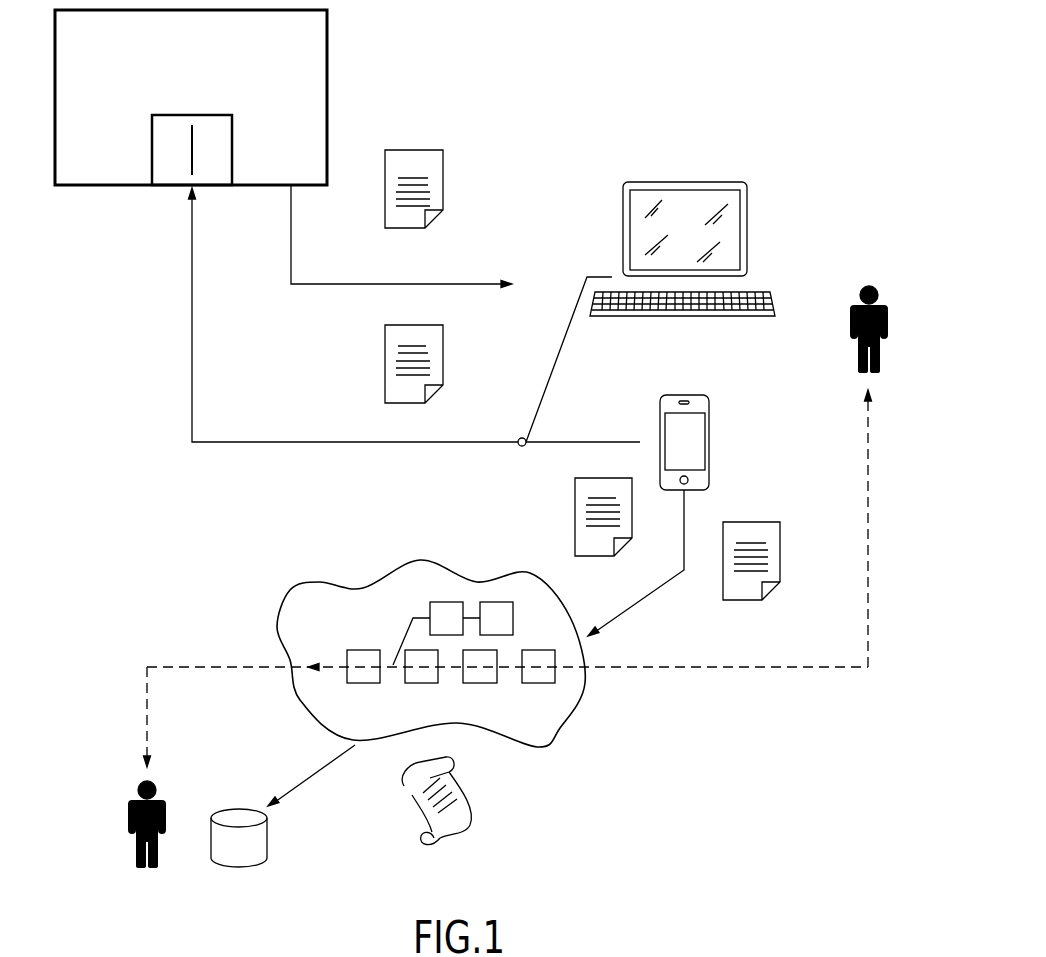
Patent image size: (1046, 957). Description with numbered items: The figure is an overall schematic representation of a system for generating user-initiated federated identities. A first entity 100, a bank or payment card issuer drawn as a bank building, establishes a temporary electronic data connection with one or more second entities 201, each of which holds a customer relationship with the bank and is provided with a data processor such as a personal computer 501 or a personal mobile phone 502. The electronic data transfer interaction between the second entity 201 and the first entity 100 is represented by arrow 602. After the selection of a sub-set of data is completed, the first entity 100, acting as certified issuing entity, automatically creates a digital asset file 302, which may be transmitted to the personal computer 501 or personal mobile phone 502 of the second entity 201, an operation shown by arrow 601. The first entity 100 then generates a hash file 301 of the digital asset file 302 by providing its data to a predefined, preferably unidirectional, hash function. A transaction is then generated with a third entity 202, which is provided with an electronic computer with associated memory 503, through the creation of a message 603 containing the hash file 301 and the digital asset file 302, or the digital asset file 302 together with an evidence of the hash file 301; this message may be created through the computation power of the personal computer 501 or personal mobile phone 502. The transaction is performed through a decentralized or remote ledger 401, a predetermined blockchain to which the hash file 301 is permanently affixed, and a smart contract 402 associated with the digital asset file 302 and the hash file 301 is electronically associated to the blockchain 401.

The first entity 100 is at (312, 68).
The second entity 201 is at (855, 300).
The third entity 202 is at (135, 790).
The hash file 301 is at (445, 165).
The digital asset file 302 is at (432, 360).
The decentralized or remote ledger 401 is at (570, 700).
The smart contract 402 is at (400, 815).
The personal computer 501 is at (707, 197).
The personal mobile phone 502 is at (700, 428).
The electronic computer with associated memory 503 is at (231, 858).
The arrow 601 is at (329, 296).
The arrow 602 is at (270, 456).
The message 603 is at (676, 588).